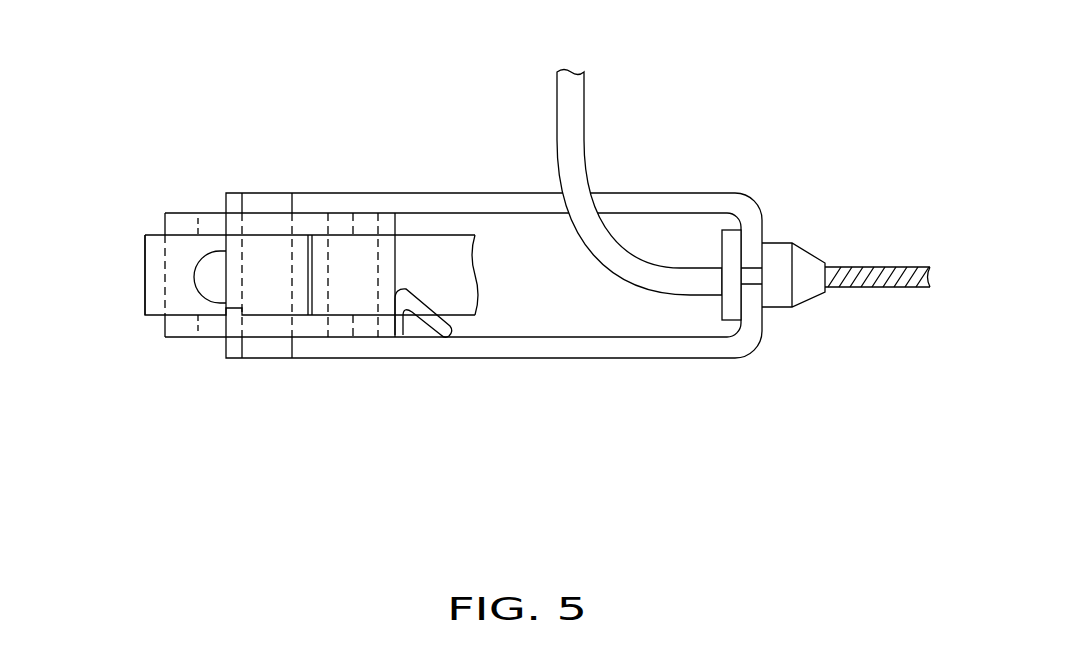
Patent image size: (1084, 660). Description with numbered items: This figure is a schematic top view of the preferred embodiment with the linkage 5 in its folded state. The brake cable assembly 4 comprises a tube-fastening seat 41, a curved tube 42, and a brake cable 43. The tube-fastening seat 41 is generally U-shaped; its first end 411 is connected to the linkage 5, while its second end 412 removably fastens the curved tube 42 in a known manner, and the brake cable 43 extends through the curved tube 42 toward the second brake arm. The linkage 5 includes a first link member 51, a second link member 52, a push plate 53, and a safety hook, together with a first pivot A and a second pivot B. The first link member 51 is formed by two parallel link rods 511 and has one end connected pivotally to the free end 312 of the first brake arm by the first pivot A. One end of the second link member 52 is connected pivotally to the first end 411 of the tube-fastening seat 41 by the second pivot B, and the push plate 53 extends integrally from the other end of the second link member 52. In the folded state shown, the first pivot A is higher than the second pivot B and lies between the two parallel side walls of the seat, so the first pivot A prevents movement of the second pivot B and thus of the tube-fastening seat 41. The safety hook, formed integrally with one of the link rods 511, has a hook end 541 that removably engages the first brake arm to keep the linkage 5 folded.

The brake cable assembly 4 is at (639, 176).
The tube-fastening seat 41 is at (317, 193).
The first end 411 is at (235, 193).
The second end 412 is at (766, 328).
The free end 312 is at (387, 270).
The curved tube 42 is at (584, 130).
The brake cable 43 is at (873, 263).
The linkage 5 is at (268, 288).
The first link member 51 is at (367, 325).
The link rods 511 is at (183, 220).
The second link member 52 is at (205, 283).
The push plate 53 is at (143, 252).
The hook end 541 is at (418, 330).
The first pivot A is at (395, 207).
The second pivot B is at (210, 315).